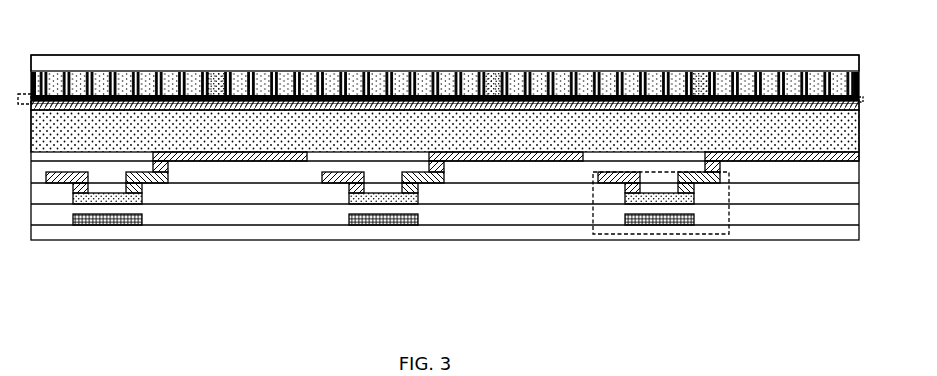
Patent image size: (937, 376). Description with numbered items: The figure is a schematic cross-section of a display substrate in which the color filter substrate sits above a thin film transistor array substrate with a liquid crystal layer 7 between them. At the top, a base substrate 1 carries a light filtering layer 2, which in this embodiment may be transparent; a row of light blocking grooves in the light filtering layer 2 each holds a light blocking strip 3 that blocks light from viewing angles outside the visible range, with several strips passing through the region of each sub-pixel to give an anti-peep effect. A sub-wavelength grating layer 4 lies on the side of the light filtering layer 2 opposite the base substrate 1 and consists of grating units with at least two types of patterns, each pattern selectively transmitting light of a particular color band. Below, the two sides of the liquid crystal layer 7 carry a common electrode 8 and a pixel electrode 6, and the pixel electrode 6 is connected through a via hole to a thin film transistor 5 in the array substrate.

The base substrate 1 is at (826, 56).
The light filtering layer 2 is at (862, 72).
The light blocking strip 3 is at (804, 72).
The sub-wavelength grating layer 4 is at (862, 94).
The thin film transistor 5 is at (663, 234).
The pixel electrode 6 is at (860, 157).
The liquid crystal layer 7 is at (862, 140).
The common electrode 8 is at (862, 110).